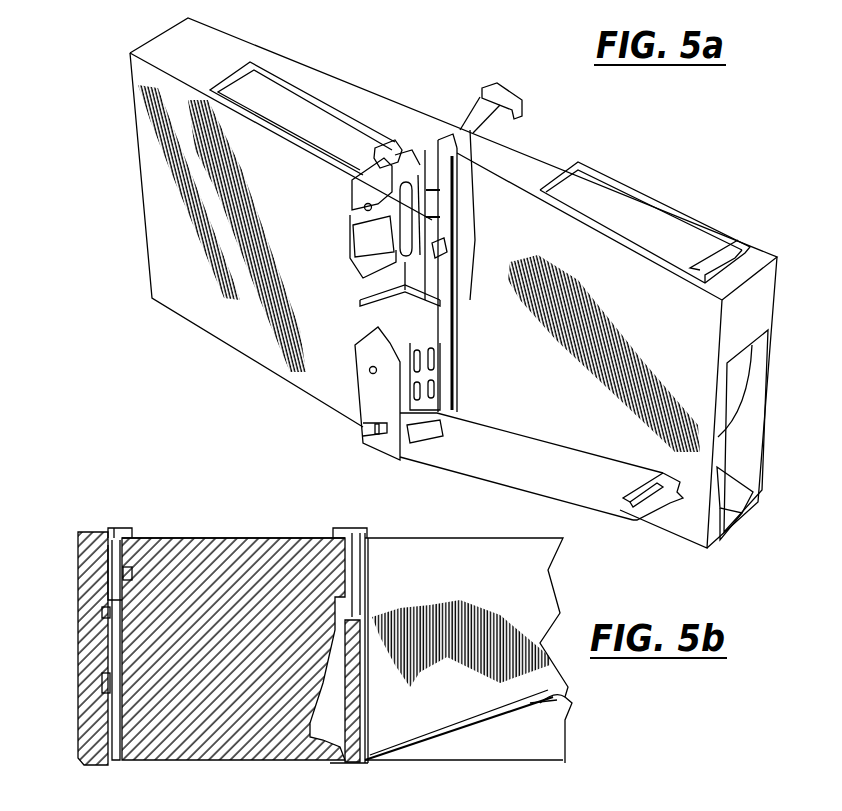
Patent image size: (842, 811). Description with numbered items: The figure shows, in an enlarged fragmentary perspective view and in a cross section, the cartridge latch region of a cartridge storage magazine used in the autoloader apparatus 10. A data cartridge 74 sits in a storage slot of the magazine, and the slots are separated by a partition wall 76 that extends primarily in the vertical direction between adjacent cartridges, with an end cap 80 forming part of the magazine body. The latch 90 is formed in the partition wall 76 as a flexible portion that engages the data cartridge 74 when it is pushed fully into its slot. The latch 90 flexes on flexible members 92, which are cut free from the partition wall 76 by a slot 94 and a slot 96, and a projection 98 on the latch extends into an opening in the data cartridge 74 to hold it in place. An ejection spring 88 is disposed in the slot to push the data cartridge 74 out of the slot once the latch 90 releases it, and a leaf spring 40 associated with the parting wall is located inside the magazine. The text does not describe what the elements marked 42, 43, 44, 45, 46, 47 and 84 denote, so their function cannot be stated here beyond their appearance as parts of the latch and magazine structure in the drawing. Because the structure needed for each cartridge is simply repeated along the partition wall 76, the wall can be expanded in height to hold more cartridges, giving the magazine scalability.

In FIG. 5b, the autoloader apparatus 10 is at (213, 720).
In FIG. 5a, the leaf spring 40 is at (541, 466).
In FIG. 5b, the leaf spring 40 is at (500, 713).
In FIG. 5a, the enclosure 42 is at (430, 190).
In FIG. 5b, the enclosure 42 is at (363, 563).
In FIG. 5a, the latch bracket 43 is at (385, 175).
In FIG. 5a, the back plate 44 is at (428, 217).
In FIG. 5b, the back plate 44 is at (365, 608).
In FIG. 5a, the top tab 45 is at (386, 145).
In FIG. 5b, the top tab 45 is at (352, 533).
In FIG. 5b, the guide slot 46 is at (120, 613).
In FIG. 5b, the bottom flange 47 is at (323, 763).
In FIG. 5b, the data cartridge 74 is at (247, 553).
In FIG. 5a, the partition wall 76 is at (363, 385).
In FIG. 5b, the end cap 80 is at (108, 670).
In FIG. 5b, the base strip 84 is at (410, 762).
In FIG. 5b, the ejection spring 88 is at (560, 713).
In FIG. 5a, the latch 90 is at (458, 188).
In FIG. 5b, the latch 90 is at (100, 537).
In FIG. 5a, the flexible member 92 is at (408, 135).
In FIG. 5a, the slot 94 is at (422, 273).
In FIG. 5a, the slot 96 is at (353, 207).
In FIG. 5a, the projection 98 is at (444, 254).
In FIG. 5b, the projection 98 is at (108, 605).